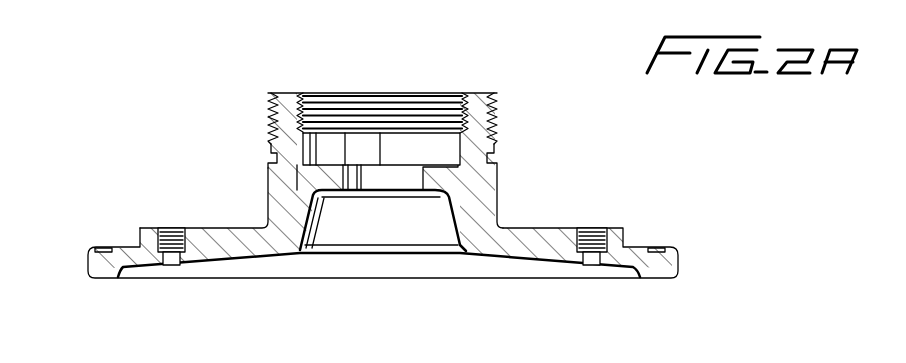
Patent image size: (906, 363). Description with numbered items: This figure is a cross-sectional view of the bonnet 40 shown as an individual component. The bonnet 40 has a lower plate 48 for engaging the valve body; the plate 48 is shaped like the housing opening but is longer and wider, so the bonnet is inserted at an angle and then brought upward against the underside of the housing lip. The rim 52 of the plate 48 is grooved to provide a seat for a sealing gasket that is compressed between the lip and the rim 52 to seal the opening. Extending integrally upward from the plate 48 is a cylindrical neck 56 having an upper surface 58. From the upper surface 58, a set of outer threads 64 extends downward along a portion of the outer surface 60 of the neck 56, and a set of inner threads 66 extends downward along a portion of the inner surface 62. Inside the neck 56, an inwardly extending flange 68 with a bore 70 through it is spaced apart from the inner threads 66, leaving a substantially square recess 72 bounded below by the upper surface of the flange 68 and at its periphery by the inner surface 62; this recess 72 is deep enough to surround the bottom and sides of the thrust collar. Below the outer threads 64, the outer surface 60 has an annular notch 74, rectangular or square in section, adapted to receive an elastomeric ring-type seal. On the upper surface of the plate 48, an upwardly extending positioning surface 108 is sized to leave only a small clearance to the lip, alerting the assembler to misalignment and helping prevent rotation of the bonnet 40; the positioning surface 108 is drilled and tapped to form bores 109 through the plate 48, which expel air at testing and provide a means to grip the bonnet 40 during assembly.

The bonnet 40 is at (353, 182).
The lower plate 48 is at (636, 245).
The rim 52 is at (90, 248).
The cylindrical neck 56 is at (512, 174).
The upper surface 58 is at (478, 93).
The outer surface 60 is at (267, 183).
The inner surface 62 is at (310, 153).
The outer threads 64 is at (268, 118).
The inner threads 66 is at (313, 140).
The inwardly extending flange 68 is at (350, 180).
The bore 70 is at (388, 182).
The recess 72 is at (374, 93).
The annular notch 74 is at (268, 156).
The positioning surface 108 is at (206, 228).
The bores 109 is at (170, 265).